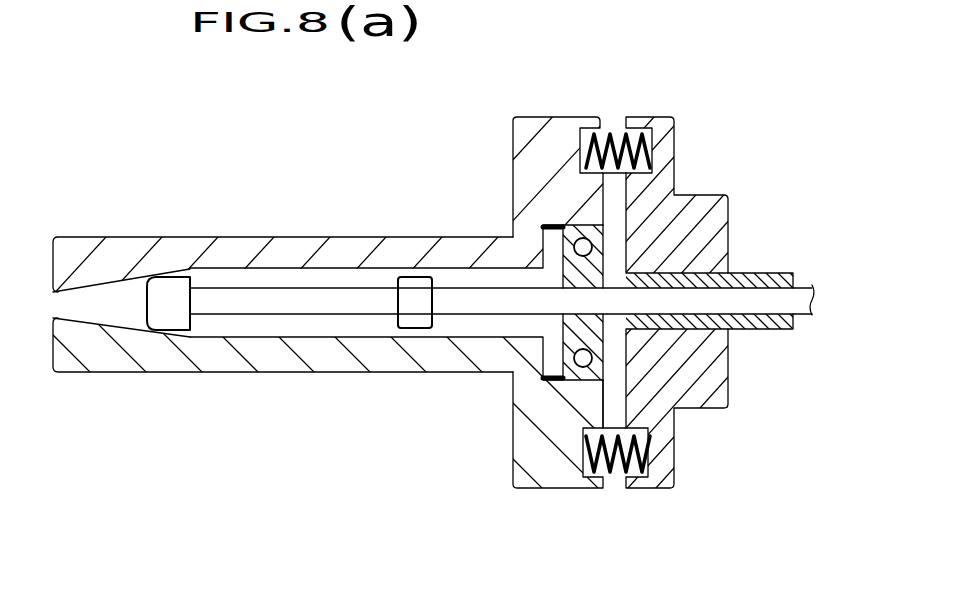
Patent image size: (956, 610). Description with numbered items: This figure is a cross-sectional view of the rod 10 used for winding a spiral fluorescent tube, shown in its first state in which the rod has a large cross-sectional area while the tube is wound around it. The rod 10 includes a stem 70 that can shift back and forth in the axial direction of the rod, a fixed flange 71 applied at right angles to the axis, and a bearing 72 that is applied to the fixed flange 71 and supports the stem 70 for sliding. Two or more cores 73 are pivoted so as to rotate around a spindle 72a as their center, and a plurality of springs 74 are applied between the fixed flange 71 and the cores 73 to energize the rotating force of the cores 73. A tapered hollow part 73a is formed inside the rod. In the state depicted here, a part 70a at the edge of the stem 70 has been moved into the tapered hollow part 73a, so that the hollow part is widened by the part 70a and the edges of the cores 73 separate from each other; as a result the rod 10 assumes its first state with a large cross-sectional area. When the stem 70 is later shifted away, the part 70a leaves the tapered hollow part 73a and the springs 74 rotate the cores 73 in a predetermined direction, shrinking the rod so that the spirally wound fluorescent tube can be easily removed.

The rod 10 is at (358, 235).
The stem 70 is at (493, 300).
The part at the edge of stem 70a is at (183, 320).
The fixed flange 71 is at (708, 238).
The bearing 72 is at (603, 222).
The spindle 72a is at (592, 240).
The cores 73 is at (521, 172).
The tapered hollow part 73a is at (112, 302).
The springs 74 is at (617, 130).